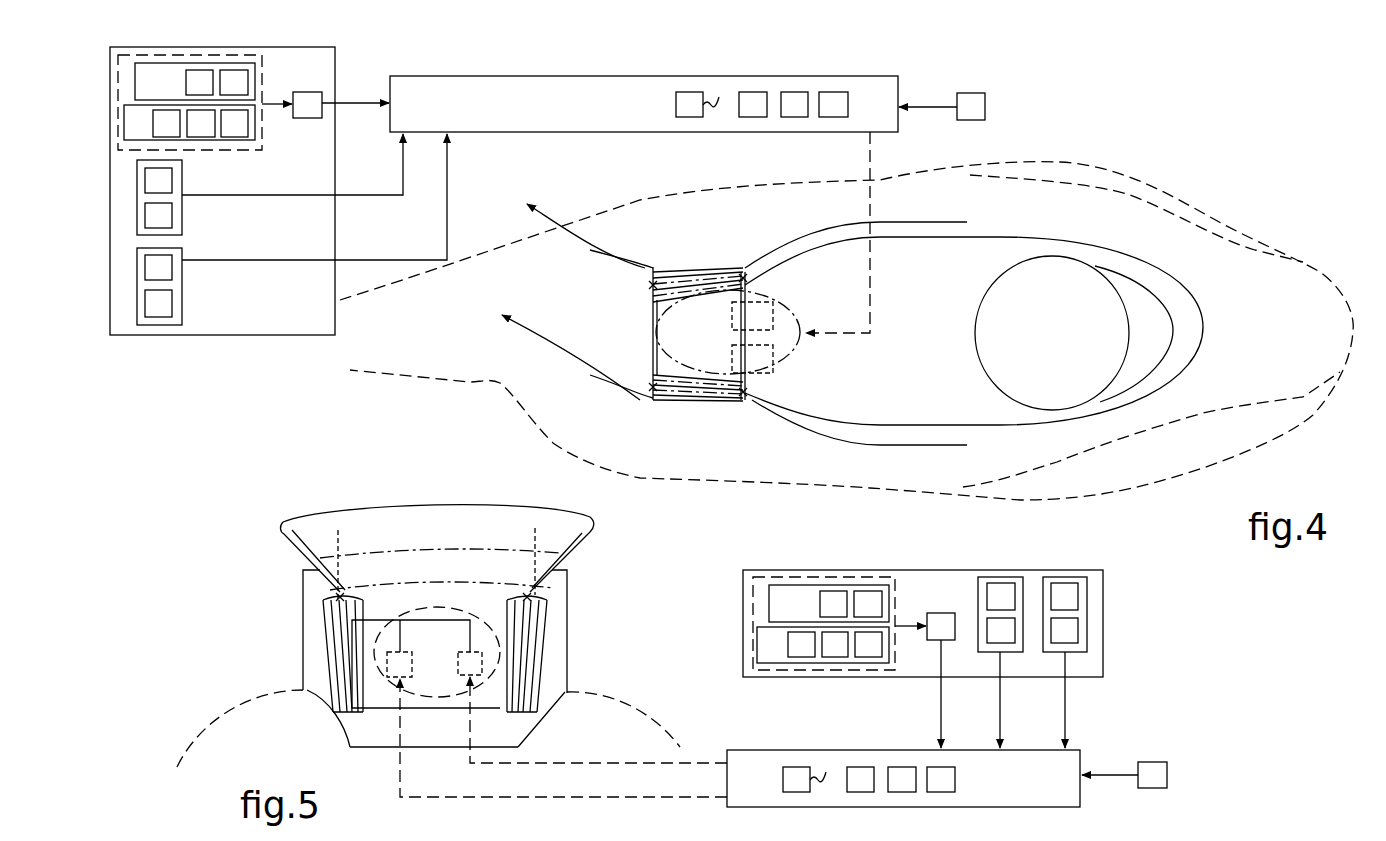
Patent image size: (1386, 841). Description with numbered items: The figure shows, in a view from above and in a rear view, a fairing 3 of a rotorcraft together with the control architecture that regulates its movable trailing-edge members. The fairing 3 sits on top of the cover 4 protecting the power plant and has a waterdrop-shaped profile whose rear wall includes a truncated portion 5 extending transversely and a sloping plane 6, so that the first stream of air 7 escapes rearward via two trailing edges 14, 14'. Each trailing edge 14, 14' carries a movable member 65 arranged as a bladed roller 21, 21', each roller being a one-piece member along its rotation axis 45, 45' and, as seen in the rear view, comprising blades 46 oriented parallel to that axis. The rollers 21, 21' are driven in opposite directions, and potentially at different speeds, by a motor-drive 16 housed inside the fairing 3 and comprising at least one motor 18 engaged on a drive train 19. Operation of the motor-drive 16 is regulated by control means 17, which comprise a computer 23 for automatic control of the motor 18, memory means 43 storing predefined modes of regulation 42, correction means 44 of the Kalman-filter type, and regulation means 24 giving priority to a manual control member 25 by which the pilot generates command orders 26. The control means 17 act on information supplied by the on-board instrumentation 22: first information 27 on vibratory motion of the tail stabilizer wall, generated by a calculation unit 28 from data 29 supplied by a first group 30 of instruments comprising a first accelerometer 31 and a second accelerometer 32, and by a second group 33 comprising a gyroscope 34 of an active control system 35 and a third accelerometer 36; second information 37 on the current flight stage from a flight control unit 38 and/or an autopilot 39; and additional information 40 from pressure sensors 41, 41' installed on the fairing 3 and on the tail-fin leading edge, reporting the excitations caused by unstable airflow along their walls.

In FIG. 4, the fairing 3 is at (959, 275).
In FIG. 5, the fairing 3 is at (305, 541).
In FIG. 4, the cover 4 is at (1087, 221).
In FIG. 5, the cover 4 is at (221, 761).
In FIG. 4, the truncated portion 5 is at (650, 372).
In FIG. 5, the truncated portion 5 is at (370, 735).
In FIG. 4, the sloping plane 6 is at (708, 347).
In FIG. 5, the sloping plane 6 is at (433, 594).
In FIG. 4, the first stream of air 7 is at (856, 335).
In FIG. 5, the first stream of air 7 is at (318, 627).
In FIG. 4, the trailing edge 14 is at (699, 305).
In FIG. 5, the trailing edge 14 is at (293, 662).
In FIG. 4, the trailing edge 14' is at (698, 416).
In FIG. 5, the trailing edge 14' is at (571, 677).
In FIG. 4, the motor-drive 16 is at (793, 312).
In FIG. 5, the motor-drive 16 is at (440, 700).
In FIG. 4, the control means 17 is at (626, 113).
In FIG. 5, the control means 17 is at (756, 788).
In FIG. 4, the motor 18 is at (752, 337).
In FIG. 5, the motor 18 is at (434, 664).
In FIG. 4, the drive train 19 is at (704, 306).
In FIG. 5, the drive train 19 is at (400, 632).
In FIG. 4, the bladed roller 21 is at (632, 251).
In FIG. 5, the bladed roller 21 is at (288, 638).
In FIG. 4, the bladed roller 21' is at (623, 423).
In FIG. 5, the bladed roller 21' is at (586, 661).
In FIG. 4, the on-board instrumentation 22 is at (302, 322).
In FIG. 5, the on-board instrumentation 22 is at (934, 603).
In FIG. 4, the computer 23 is at (794, 104).
In FIG. 5, the computer 23 is at (902, 779).
In FIG. 4, the regulation means 24 is at (833, 104).
In FIG. 5, the regulation means 24 is at (941, 779).
In FIG. 4, the manual control member 25 is at (971, 106).
In FIG. 5, the manual control member 25 is at (1152, 775).
In FIG. 4, the command orders 26 is at (928, 97).
In FIG. 5, the command orders 26 is at (1110, 765).
In FIG. 4, the first information 27 is at (355, 93).
In FIG. 5, the first information 27 is at (928, 694).
In FIG. 4, the calculation unit 28 is at (307, 105).
In FIG. 5, the calculation unit 28 is at (941, 626).
In FIG. 4, the data 29 is at (277, 94).
In FIG. 5, the data 29 is at (910, 616).
In FIG. 4, the first group of on-board instruments 30 is at (149, 90).
In FIG. 5, the first group of on-board instruments 30 is at (783, 612).
In FIG. 4, the first accelerometer 31 is at (199, 82).
In FIG. 5, the first accelerometer 31 is at (833, 604).
In FIG. 4, the second accelerometer 32 is at (234, 82).
In FIG. 5, the second accelerometer 32 is at (868, 604).
In FIG. 4, the second group of on-board instruments 33 is at (130, 132).
In FIG. 5, the second group of on-board instruments 33 is at (763, 653).
In FIG. 4, the gyroscope 34 is at (166, 123).
In FIG. 5, the gyroscope 34 is at (801, 644).
In FIG. 4, the active control system 35 is at (201, 123).
In FIG. 5, the active control system 35 is at (835, 644).
In FIG. 4, the third accelerometer 36 is at (234, 123).
In FIG. 5, the third accelerometer 36 is at (868, 644).
In FIG. 4, the second information 37 is at (292, 164).
In FIG. 5, the second information 37 is at (988, 700).
In FIG. 4, the flight control unit 38 is at (159, 197).
In FIG. 5, the flight control unit 38 is at (1000, 614).
In FIG. 4, the autopilot 39 is at (158, 215).
In FIG. 5, the autopilot 39 is at (1001, 630).
In FIG. 4, the additional information 40 is at (326, 197).
In FIG. 5, the additional information 40 is at (1053, 700).
In FIG. 4, the pressure sensor 41 is at (159, 286).
In FIG. 5, the pressure sensor 41 is at (1065, 614).
In FIG. 4, the pressure sensor 41' is at (158, 303).
In FIG. 5, the pressure sensor 41' is at (1064, 630).
In FIG. 4, the predefined modes of regulation 42 is at (689, 104).
In FIG. 5, the predefined modes of regulation 42 is at (796, 779).
In FIG. 4, the memory means 43 is at (717, 95).
In FIG. 5, the memory means 43 is at (824, 770).
In FIG. 4, the correction means 44 is at (753, 104).
In FIG. 5, the correction means 44 is at (860, 779).
In FIG. 4, the rotation axis 45 is at (773, 235).
In FIG. 5, the rotation axis 45 is at (343, 535).
In FIG. 4, the rotation axis 45' is at (758, 429).
In FIG. 5, the rotation axis 45' is at (583, 561).
In FIG. 5, the blades 46 is at (343, 690).
In FIG. 4, the movable member 65 is at (755, 280).
In FIG. 5, the movable member 65 is at (346, 592).